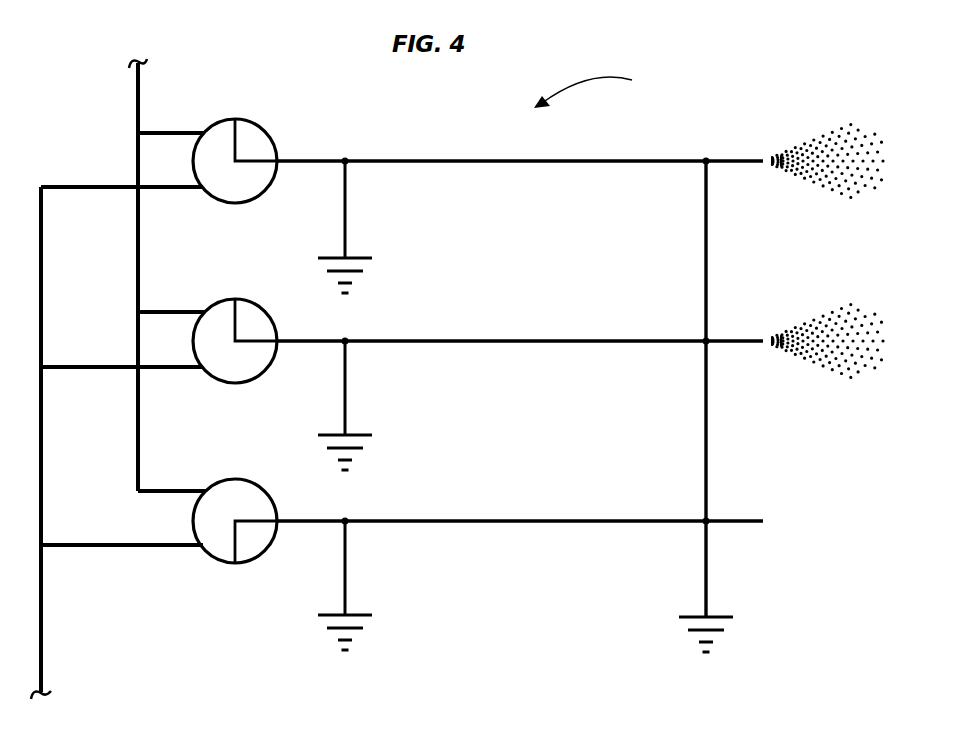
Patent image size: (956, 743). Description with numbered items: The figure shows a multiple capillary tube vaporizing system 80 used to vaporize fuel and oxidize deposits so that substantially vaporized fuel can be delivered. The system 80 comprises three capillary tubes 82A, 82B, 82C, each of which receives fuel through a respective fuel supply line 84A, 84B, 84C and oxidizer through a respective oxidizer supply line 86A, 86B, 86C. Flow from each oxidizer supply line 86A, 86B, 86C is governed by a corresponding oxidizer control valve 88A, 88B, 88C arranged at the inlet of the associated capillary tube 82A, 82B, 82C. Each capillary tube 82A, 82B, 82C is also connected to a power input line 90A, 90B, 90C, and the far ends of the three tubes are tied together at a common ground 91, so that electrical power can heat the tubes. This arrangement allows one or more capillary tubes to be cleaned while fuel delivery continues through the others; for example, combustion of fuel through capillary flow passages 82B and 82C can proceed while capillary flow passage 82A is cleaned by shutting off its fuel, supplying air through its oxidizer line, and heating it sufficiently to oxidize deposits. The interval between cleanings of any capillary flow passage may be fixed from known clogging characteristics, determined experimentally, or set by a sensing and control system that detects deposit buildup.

The multiple capillary tube vaporizing system 80 is at (599, 90).
The capillary tube 82A is at (530, 520).
The capillary tube 82B is at (530, 340).
The capillary tube 82C is at (530, 160).
The fuel supply line 84A is at (158, 490).
The fuel supply line 84B is at (158, 311).
The fuel supply line 84C is at (155, 132).
The oxidizer supply line 86A is at (116, 544).
The oxidizer supply line 86B is at (113, 366).
The oxidizer supply line 86C is at (95, 186).
The oxidizer control valve 88A is at (243, 480).
The oxidizer control valve 88B is at (243, 300).
The oxidizer control valve 88C is at (247, 122).
The power input line 90A is at (347, 546).
The power input line 90B is at (347, 366).
The power input line 90C is at (347, 185).
The common ground 91 is at (704, 558).